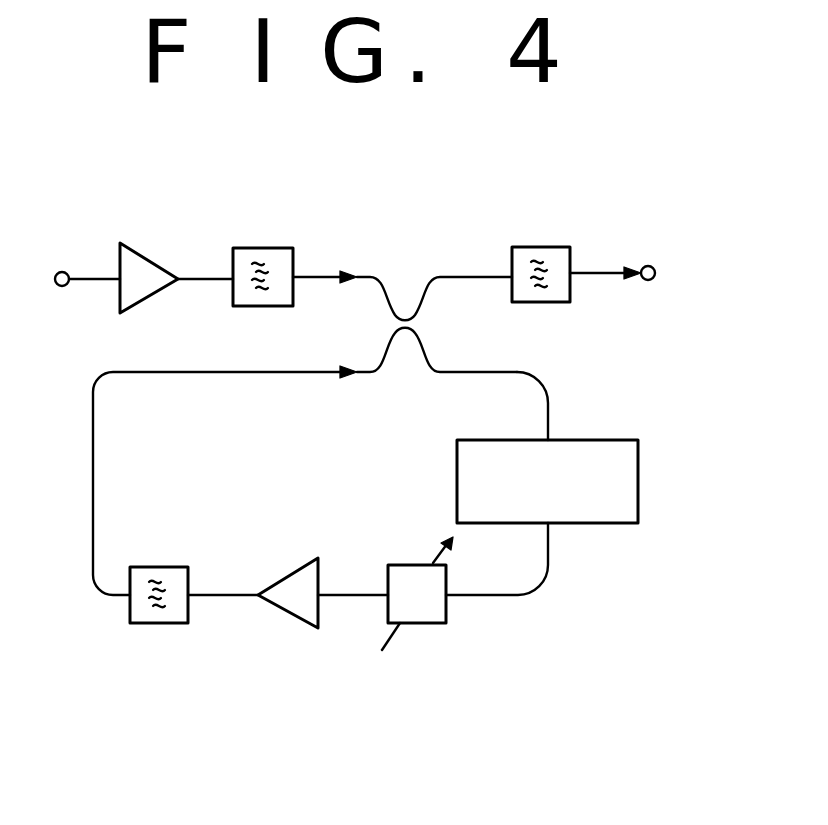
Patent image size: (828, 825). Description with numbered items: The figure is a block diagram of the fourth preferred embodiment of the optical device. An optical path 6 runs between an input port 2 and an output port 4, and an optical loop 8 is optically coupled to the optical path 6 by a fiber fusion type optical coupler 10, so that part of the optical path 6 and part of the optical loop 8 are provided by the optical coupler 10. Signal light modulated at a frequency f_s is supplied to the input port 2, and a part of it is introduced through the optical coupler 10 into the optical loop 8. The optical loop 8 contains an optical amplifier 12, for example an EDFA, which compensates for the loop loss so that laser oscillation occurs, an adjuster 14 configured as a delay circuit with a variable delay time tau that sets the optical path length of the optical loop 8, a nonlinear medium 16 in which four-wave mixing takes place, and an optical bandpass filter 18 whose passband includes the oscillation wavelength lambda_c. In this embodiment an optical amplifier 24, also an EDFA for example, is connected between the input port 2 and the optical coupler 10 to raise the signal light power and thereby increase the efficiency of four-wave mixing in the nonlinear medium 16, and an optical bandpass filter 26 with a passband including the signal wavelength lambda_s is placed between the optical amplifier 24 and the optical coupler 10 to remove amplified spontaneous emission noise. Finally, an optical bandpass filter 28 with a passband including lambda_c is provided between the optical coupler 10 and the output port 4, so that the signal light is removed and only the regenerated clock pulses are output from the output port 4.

The input port 2 is at (62, 272).
The output port 4 is at (648, 266).
The optical path 6 is at (327, 277).
The optical loop 8 is at (112, 373).
The optical coupler 10 is at (405, 293).
The optical amplifier 12 is at (296, 617).
The adjuster 14 is at (425, 623).
The nonlinear medium 16 is at (640, 480).
The optical bandpass filter 18 is at (160, 623).
The optical amplifier 24 is at (152, 256).
The optical bandpass filter 26 is at (262, 306).
The optical bandpass filter 28 is at (542, 302).